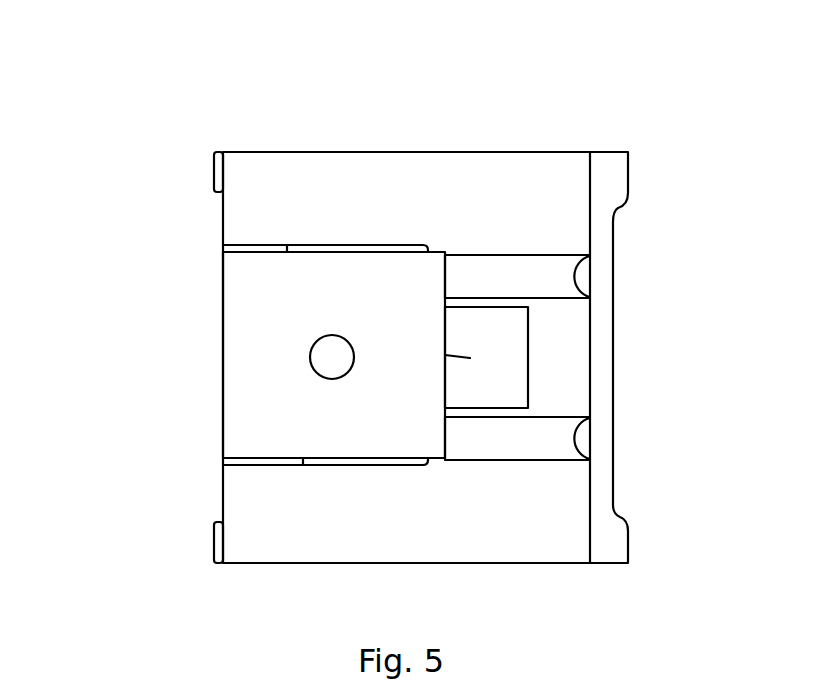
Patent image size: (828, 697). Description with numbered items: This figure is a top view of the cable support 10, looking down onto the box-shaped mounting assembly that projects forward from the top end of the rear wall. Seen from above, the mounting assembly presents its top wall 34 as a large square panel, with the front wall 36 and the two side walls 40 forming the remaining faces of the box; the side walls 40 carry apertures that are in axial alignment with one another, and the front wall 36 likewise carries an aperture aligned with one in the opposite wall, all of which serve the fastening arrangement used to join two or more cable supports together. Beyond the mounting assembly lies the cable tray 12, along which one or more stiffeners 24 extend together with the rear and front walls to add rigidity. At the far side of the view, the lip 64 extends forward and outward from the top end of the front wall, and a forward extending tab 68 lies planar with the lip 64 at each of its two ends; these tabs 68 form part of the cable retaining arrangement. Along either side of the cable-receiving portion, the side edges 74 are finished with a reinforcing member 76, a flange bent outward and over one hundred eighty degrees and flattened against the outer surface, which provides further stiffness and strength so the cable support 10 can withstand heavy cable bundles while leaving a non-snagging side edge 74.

The cable support 10 is at (128, 306).
The cable tray 12 is at (573, 361).
The stiffeners 24 is at (512, 283).
The top wall 34 is at (411, 306).
The front wall 36 is at (470, 358).
The side walls 40 is at (287, 246).
The lip 64 is at (597, 321).
The forward extending tab 68 is at (612, 176).
The side edges 74 is at (425, 153).
The reinforcing member 76 is at (215, 168).